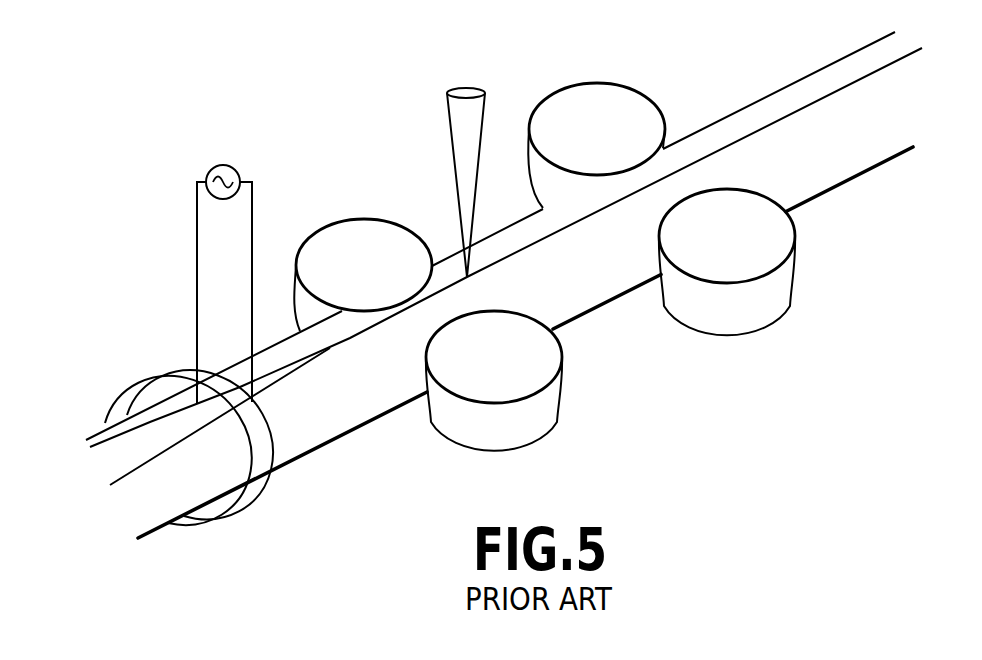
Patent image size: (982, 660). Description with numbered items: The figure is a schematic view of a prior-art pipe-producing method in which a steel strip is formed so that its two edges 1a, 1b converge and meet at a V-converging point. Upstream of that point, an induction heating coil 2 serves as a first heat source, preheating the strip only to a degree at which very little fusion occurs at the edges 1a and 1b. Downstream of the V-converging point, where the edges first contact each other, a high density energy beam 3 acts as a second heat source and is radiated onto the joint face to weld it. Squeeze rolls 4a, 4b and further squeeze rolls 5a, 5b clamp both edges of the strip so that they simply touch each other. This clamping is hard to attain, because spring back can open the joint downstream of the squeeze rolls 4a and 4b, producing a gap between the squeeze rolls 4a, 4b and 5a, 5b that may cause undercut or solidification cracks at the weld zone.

The edge of the steel strip 1a is at (283, 367).
The edge of the steel strip 1b is at (283, 377).
The induction heating coil 2 is at (197, 229).
The high density energy beam 3 is at (447, 110).
The squeeze roll 4a is at (357, 218).
The squeeze roll 4b is at (563, 365).
The squeeze roll 5a is at (597, 82).
The squeeze roll 5b is at (797, 250).